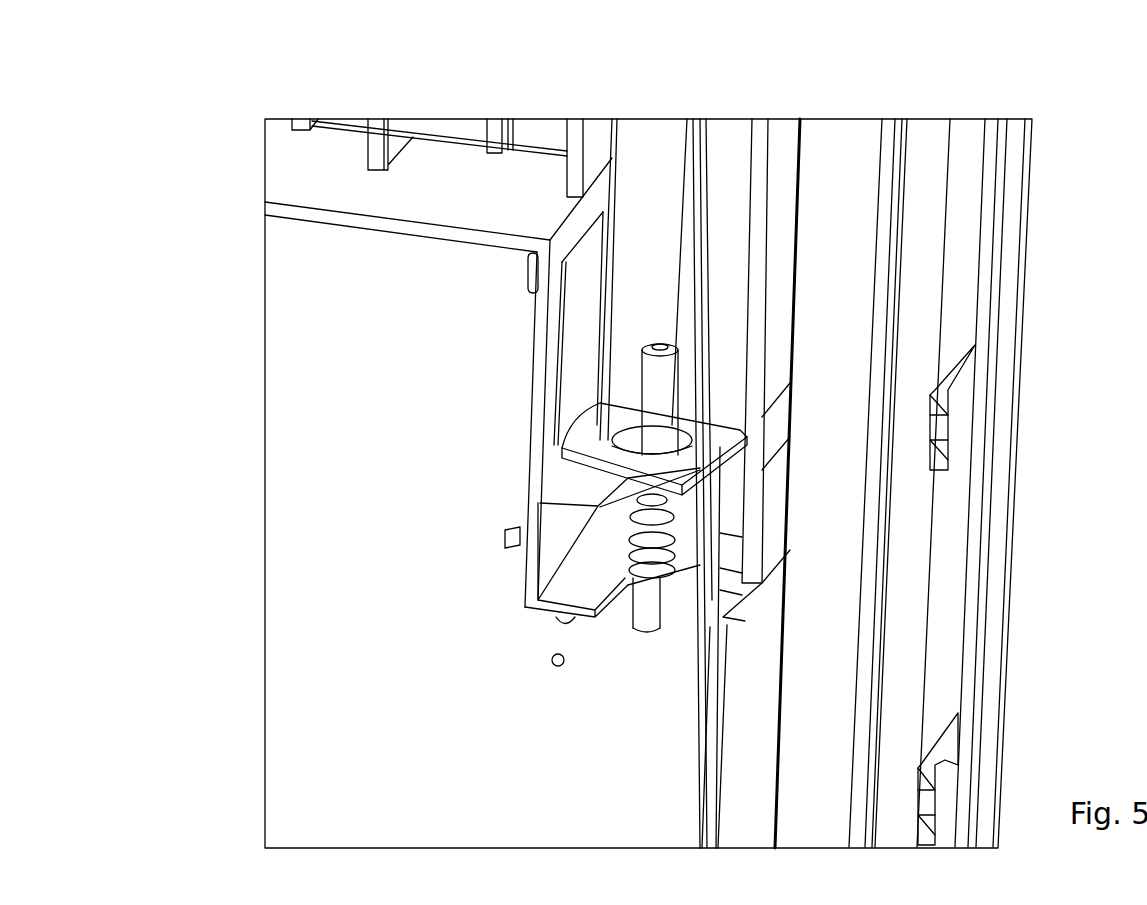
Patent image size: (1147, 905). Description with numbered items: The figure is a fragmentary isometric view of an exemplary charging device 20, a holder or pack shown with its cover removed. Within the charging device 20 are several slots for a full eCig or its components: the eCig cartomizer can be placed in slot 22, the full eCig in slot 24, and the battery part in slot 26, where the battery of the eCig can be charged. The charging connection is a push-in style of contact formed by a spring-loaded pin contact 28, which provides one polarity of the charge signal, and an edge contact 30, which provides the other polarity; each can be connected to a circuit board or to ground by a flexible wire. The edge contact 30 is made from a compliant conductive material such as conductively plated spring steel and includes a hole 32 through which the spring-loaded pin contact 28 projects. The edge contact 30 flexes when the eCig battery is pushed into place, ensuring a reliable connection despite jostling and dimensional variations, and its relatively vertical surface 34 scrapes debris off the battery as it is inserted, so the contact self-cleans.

The charging device 20 is at (257, 80).
The slot 22 is at (365, 91).
The slot 24 is at (990, 91).
The slot 26 is at (583, 91).
The spring-loaded pin contact 28 is at (676, 356).
The edge contact 30 is at (585, 415).
The hole 32 is at (700, 450).
The relatively vertical surface 34 is at (606, 294).